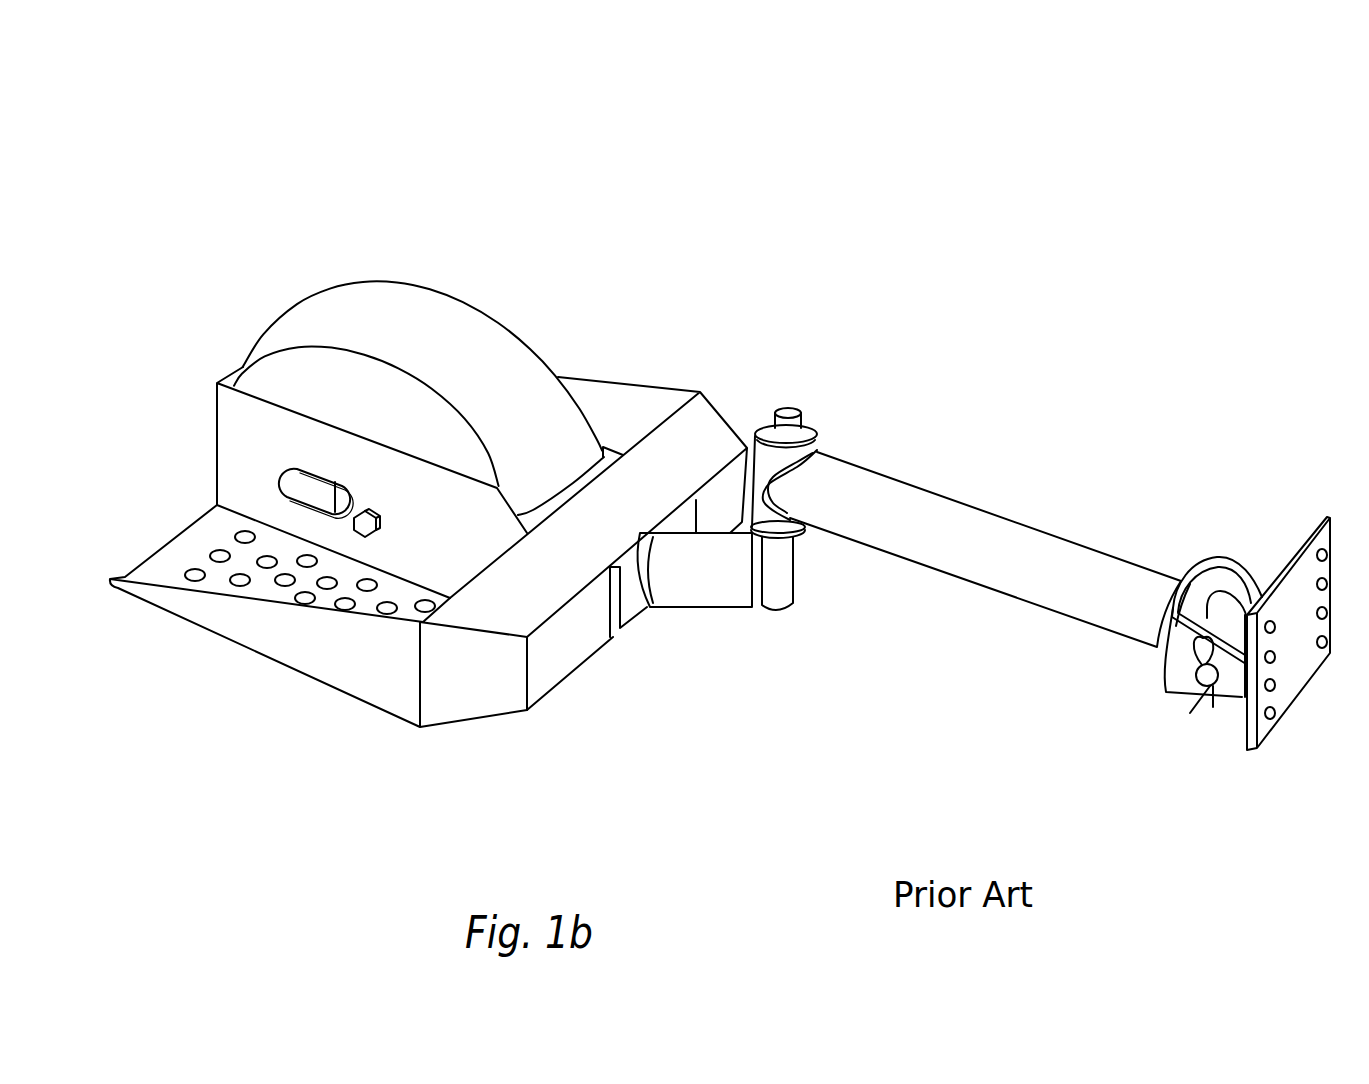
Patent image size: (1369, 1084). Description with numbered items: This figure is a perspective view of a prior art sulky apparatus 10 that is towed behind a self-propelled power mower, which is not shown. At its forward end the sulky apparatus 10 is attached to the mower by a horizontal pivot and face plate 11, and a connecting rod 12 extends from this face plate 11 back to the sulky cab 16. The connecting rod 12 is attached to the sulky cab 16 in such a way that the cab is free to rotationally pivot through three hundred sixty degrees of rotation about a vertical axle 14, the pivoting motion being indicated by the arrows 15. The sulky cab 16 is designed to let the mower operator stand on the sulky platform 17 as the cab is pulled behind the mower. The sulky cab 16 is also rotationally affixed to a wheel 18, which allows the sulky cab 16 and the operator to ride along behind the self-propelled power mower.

The prior art sulky apparatus 10 is at (1180, 238).
The horizontal pivot and face plate 11 is at (1250, 556).
The connecting rod 12 is at (1072, 558).
The vertical axle 14 is at (789, 408).
The arrows 15 is at (627, 650).
The sulky cab 16 is at (560, 362).
The sulky platform 17 is at (215, 532).
The wheel 18 is at (427, 315).